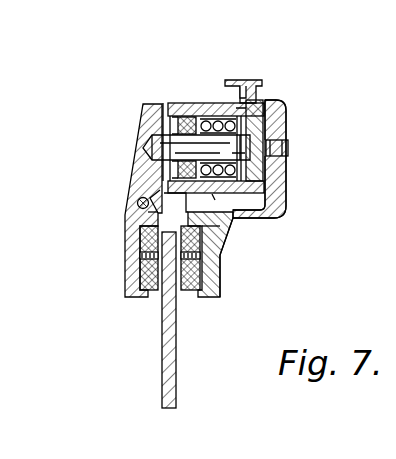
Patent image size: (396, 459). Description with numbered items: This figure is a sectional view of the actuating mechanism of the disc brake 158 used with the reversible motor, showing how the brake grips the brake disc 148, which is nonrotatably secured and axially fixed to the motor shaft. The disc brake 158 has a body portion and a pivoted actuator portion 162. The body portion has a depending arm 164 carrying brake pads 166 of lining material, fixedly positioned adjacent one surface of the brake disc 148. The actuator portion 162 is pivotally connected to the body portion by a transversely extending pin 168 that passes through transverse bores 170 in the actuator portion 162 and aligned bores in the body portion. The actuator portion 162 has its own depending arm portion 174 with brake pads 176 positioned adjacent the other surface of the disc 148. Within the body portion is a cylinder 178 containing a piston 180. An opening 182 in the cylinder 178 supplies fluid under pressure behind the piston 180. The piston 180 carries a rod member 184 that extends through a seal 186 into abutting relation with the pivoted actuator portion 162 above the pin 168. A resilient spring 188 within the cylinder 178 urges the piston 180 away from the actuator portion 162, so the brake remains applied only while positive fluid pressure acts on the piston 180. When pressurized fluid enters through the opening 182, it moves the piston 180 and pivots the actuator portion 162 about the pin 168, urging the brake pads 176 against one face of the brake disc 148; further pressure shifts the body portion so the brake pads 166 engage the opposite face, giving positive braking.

The brake disc 148 is at (178, 338).
The disc brake 158 is at (270, 90).
The pivoted actuator portion 162 is at (146, 110).
The depending arm 164 is at (212, 273).
The brake pads 166 is at (206, 259).
The transversely extending pin 168 is at (139, 200).
The transverse bores 170 is at (136, 206).
The depending arm portion 174 is at (125, 271).
The brake pads 176 is at (150, 292).
The cylinder 178 is at (190, 103).
The piston 180 is at (233, 136).
The opening 182 is at (231, 92).
The rod member 184 is at (165, 143).
The seal 186 is at (210, 103).
The resilient spring 188 is at (224, 201).